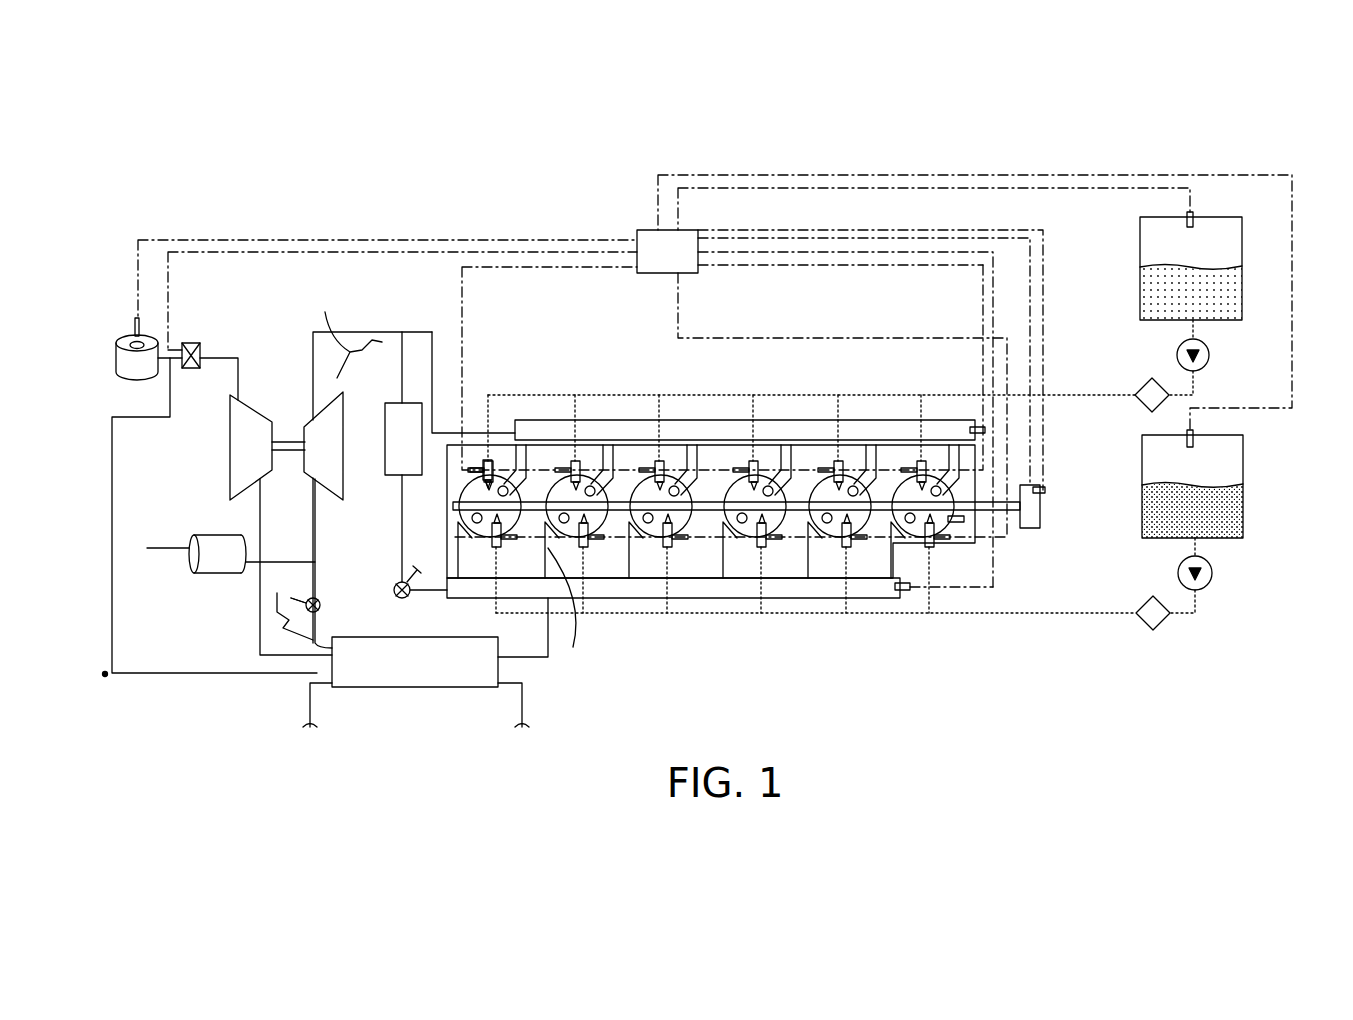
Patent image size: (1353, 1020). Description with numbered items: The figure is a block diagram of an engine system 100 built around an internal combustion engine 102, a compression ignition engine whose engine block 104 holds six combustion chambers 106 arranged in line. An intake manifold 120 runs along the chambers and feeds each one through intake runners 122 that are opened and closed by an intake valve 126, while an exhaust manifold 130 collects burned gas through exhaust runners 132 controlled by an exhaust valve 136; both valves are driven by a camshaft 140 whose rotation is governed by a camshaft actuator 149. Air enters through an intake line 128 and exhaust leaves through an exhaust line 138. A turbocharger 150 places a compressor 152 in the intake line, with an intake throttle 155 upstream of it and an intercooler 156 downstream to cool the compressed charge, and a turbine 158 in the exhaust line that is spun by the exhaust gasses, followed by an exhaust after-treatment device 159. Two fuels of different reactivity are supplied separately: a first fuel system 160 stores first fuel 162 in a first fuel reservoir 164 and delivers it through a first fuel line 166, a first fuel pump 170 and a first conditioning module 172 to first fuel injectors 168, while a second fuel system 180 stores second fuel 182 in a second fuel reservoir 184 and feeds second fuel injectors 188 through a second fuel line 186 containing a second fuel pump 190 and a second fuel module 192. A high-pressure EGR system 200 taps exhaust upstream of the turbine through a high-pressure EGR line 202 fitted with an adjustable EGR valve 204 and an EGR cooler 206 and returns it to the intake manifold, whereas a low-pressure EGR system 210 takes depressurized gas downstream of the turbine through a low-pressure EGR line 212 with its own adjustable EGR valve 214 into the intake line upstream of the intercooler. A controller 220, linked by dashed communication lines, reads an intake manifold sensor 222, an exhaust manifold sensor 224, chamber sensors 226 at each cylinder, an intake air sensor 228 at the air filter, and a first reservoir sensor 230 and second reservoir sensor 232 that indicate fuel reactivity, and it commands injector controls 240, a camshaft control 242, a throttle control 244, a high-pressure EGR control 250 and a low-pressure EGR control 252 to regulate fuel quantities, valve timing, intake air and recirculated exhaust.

The engine system 100 is at (282, 162).
The internal combustion engine 102 is at (753, 507).
The engine block 104 is at (455, 457).
The combustion chambers 106 is at (535, 478).
The intake manifold 120 is at (782, 590).
The intake runners 122 is at (617, 560).
The intake valve 126 is at (558, 552).
The intake line 128 is at (262, 630).
The exhaust manifold 130 is at (858, 420).
The exhaust runners 132 is at (700, 455).
The exhaust valve 136 is at (603, 495).
The exhaust line 138 is at (414, 332).
The camshaft 140 is at (700, 540).
The camshaft actuator 149 is at (1040, 510).
The turbocharger 150 is at (248, 438).
The compressor 152 is at (258, 465).
The intake throttle 155 is at (200, 348).
The intercooler 156 is at (118, 338).
The turbine 158 is at (308, 427).
The exhaust after-treatment device 159 is at (207, 535).
The first fuel system 160 is at (905, 555).
The first fuel 162 is at (1165, 500).
The first fuel reservoir 164 is at (1142, 450).
The first fuel line 166 is at (1053, 618).
The first fuel injectors 168 is at (662, 540).
The first fuel pump 170 is at (1213, 573).
The first conditioning module 172 is at (1162, 628).
The second fuel system 180 is at (913, 298).
The second fuel 182 is at (1160, 288).
The second fuel reservoir 184 is at (1140, 228).
The second fuel line 186 is at (1062, 395).
The second fuel injectors 188 is at (658, 502).
The second fuel pump 190 is at (1212, 355).
The second fuel module 192 is at (1140, 383).
The high-pressure EGR system 200 is at (366, 467).
The high-pressure EGR line 202 is at (400, 478).
The adjustable EGR valve 204 is at (410, 598).
The EGR cooler 206 is at (384, 438).
The low-pressure EGR system 210 is at (277, 595).
The low-pressure EGR line 212 is at (317, 575).
The adjustable EGR valve 214 is at (320, 600).
The controller 220 is at (640, 230).
The intake manifold sensor 222 is at (903, 592).
The exhaust manifold sensor 224 is at (978, 427).
The chamber sensors 226 is at (960, 525).
The intake air sensor 228 is at (136, 318).
The first reservoir sensor 230 is at (1193, 440).
The second reservoir sensor 232 is at (1193, 222).
The injector controls 240 is at (473, 462).
The camshaft control 242 is at (1045, 493).
The throttle control 244 is at (178, 343).
The high-pressure EGR control 250 is at (418, 568).
The low-pressure EGR control 252 is at (291, 598).